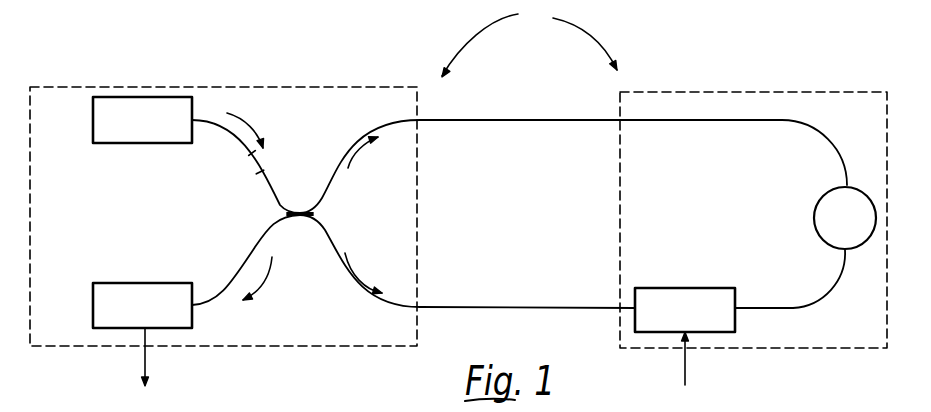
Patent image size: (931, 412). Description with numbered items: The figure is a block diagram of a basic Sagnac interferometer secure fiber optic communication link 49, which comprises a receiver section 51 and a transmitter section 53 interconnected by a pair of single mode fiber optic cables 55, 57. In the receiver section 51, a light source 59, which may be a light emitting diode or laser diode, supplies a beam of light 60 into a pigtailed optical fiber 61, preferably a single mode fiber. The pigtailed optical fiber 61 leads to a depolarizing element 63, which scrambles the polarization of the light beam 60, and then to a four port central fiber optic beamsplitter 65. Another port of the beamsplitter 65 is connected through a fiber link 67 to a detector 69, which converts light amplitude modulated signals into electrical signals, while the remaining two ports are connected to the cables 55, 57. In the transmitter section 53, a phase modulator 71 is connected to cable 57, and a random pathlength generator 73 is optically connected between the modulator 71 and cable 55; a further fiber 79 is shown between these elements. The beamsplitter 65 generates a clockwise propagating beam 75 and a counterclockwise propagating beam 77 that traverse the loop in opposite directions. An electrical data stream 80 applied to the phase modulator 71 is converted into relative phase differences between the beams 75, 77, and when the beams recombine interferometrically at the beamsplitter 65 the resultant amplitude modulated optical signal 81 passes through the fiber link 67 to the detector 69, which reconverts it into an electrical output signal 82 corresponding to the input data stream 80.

The Sagnac interferometer secure fiber optic communication link 49 is at (529, 38).
The receiver section 51 is at (218, 87).
The transmitter section 53 is at (740, 92).
The single mode fiber optic cable 55 is at (556, 120).
The single mode fiber optic cable 57 is at (512, 307).
The light source 59 is at (142, 145).
The beam of light 60 is at (253, 123).
The pigtailed optical fiber 61 is at (210, 118).
The depolarizing element 63 is at (250, 157).
The central fiber optic beamsplitter 65 is at (299, 214).
The fiber link 67 is at (257, 268).
The detector 69 is at (134, 293).
The phase modulator 71 is at (701, 284).
The random pathlength generator 73 is at (845, 218).
The clockwise propagating light beam 75 is at (362, 153).
The counterclockwise propagating light beam 77 is at (360, 267).
The fiber 79 is at (793, 308).
The electrical data stream 80 is at (685, 360).
The amplitude modulated optical signal 81 is at (263, 277).
The electrical output signal 82 is at (143, 355).